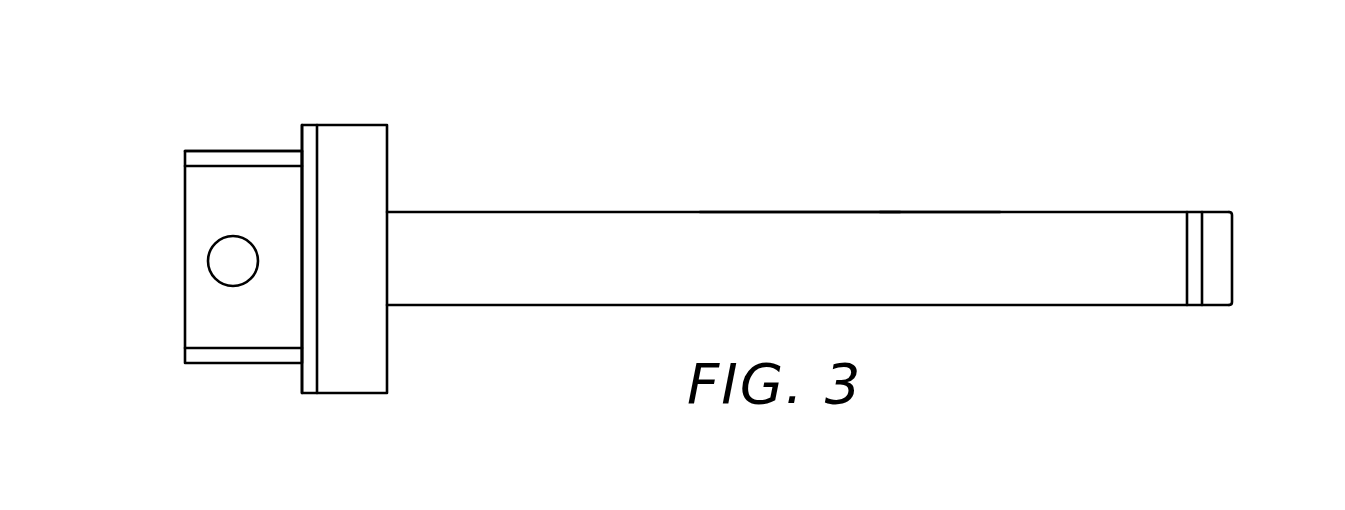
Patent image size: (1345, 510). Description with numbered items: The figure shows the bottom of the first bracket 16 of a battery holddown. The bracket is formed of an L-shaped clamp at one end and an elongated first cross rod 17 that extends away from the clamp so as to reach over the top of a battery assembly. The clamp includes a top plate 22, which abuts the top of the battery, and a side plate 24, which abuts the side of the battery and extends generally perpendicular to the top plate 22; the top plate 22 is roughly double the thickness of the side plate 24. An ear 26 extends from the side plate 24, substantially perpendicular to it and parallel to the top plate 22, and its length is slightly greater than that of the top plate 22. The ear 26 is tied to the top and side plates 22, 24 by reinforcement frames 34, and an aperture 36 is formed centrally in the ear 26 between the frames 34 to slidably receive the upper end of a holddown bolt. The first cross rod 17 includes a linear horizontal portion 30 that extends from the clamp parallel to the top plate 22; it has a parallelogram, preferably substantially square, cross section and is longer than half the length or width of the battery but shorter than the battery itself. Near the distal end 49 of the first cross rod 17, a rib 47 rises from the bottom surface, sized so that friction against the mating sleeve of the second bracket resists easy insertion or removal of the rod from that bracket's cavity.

The first bracket 16 is at (650, 185).
The first cross rod 17 is at (815, 223).
The top plate 22 is at (372, 132).
The side plate 24 is at (313, 137).
The ear 26 is at (192, 212).
The first horizontal portion 30 is at (928, 223).
The reinforcement frame 34 is at (195, 157).
The aperture 36 is at (220, 275).
The rib 47 is at (1193, 223).
The distal end 49 is at (1233, 243).